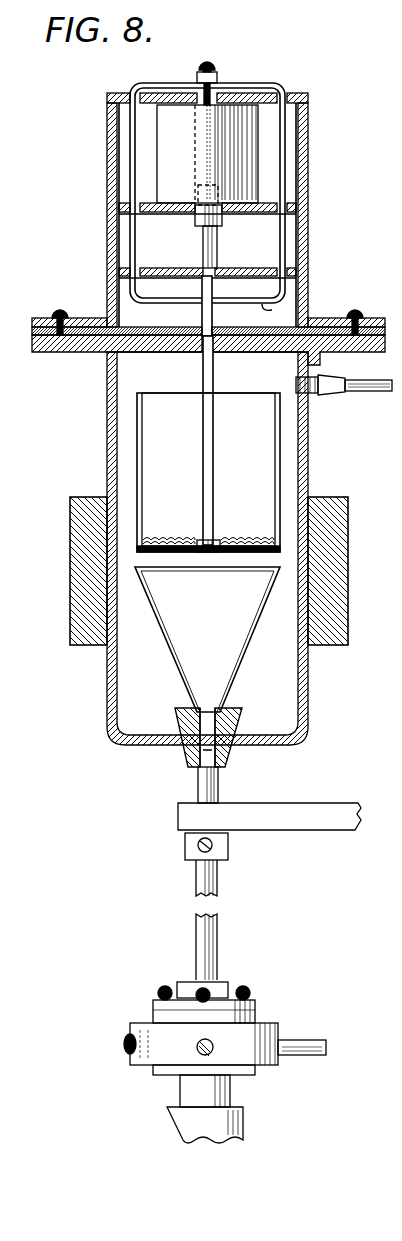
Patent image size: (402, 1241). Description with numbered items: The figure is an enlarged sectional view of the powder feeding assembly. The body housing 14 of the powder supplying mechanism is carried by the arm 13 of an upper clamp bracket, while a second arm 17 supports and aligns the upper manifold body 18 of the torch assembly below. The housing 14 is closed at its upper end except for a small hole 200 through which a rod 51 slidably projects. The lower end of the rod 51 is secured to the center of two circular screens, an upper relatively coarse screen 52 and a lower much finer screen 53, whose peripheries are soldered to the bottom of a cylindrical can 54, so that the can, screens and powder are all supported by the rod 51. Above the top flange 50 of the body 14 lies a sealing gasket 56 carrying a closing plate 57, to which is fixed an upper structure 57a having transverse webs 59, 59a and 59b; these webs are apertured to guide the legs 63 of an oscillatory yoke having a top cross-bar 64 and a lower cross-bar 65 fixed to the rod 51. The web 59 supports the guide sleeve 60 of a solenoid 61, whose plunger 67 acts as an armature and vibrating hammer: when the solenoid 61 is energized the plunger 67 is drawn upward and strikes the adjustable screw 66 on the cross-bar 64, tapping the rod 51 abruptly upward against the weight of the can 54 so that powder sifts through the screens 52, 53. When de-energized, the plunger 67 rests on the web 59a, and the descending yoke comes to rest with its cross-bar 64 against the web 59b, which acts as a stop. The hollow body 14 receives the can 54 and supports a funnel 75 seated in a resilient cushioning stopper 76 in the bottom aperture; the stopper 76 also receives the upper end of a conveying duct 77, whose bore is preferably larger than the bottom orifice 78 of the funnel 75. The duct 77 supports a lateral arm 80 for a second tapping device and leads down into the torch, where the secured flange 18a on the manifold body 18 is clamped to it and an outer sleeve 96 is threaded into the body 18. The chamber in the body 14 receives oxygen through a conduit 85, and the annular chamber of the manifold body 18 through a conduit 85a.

The arm 13 is at (335, 515).
The body housing 14 is at (310, 690).
The arm 17 is at (135, 1060).
The upper manifold body 18 is at (258, 1014).
The secured flange 18a is at (250, 995).
The top flange 50 is at (82, 347).
The rod 51 is at (203, 372).
The upper screen 52 is at (166, 540).
The lower screen 53 is at (239, 540).
The cylindrical can 54 is at (283, 455).
The sealing gasket 56 is at (44, 352).
The closing plate 57 is at (86, 325).
The upper structure 57a is at (112, 226).
The web 59 is at (307, 190).
The web 59a is at (292, 268).
The web 59b is at (300, 106).
The guide sleeve 60 is at (222, 218).
The solenoid 61 is at (245, 158).
The legs 63 is at (135, 148).
The top cross-bar 64 is at (266, 88).
The lower cross-bar 65 is at (272, 310).
The adjustable screw 66 is at (213, 66).
The plunger 67 is at (203, 250).
The funnel 75 is at (233, 648).
The resilient cushioning stopper 76 is at (232, 756).
The conveying duct 77 is at (218, 918).
The bottom orifice 78 is at (185, 748).
The lateral arm 80 is at (296, 816).
The conduit 85 is at (368, 391).
The conduit 85a is at (313, 1030).
The outer sleeve 96 is at (190, 1095).
The hole 200 is at (201, 323).